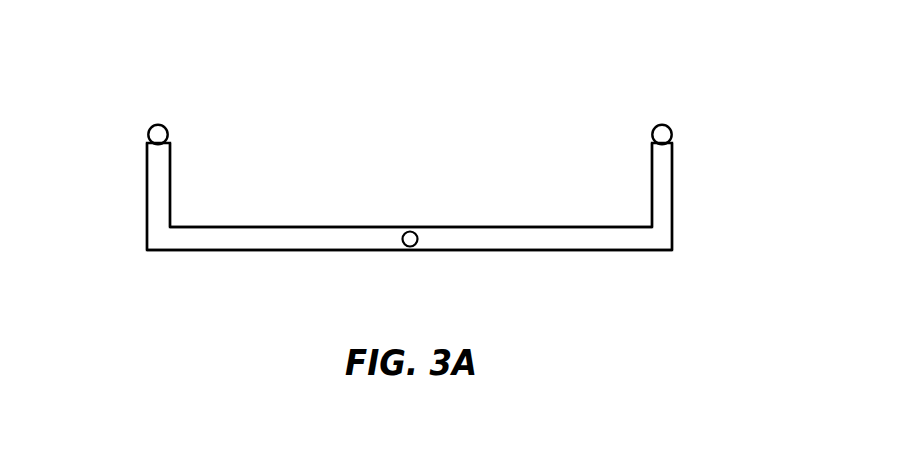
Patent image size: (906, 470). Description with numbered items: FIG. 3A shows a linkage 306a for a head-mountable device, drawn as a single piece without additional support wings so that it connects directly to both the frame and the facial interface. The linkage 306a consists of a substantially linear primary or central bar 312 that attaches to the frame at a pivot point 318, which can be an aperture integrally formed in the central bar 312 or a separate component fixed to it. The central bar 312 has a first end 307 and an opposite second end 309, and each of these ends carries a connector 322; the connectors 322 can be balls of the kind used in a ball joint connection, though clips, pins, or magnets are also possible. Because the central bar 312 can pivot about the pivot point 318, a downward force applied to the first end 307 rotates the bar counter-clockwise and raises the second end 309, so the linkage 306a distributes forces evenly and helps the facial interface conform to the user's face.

The linkage 306a is at (582, 60).
The first end 307 is at (147, 197).
The second end 309 is at (672, 197).
The central bar 312 is at (213, 250).
The pivot point 318 is at (403, 246).
The connectors 322 is at (153, 127).